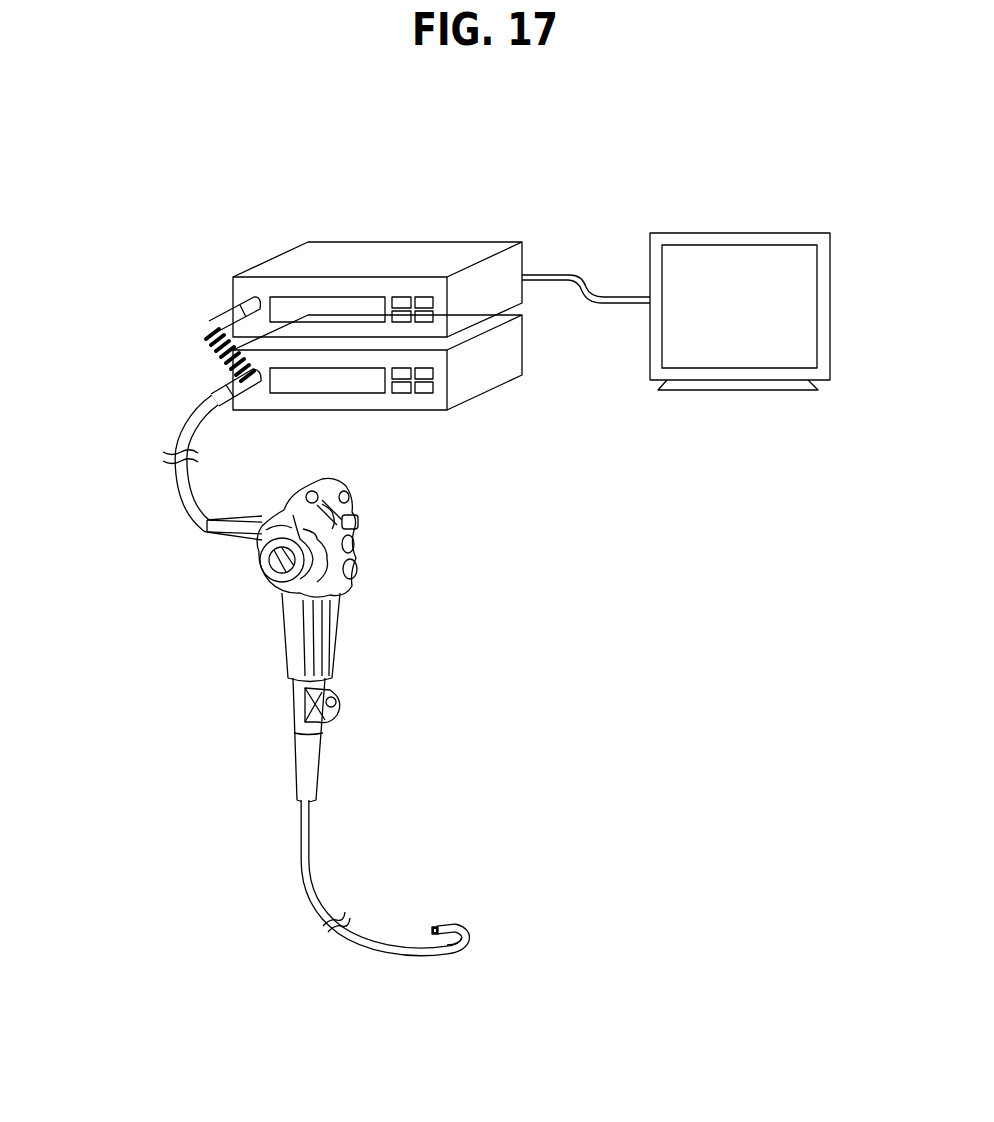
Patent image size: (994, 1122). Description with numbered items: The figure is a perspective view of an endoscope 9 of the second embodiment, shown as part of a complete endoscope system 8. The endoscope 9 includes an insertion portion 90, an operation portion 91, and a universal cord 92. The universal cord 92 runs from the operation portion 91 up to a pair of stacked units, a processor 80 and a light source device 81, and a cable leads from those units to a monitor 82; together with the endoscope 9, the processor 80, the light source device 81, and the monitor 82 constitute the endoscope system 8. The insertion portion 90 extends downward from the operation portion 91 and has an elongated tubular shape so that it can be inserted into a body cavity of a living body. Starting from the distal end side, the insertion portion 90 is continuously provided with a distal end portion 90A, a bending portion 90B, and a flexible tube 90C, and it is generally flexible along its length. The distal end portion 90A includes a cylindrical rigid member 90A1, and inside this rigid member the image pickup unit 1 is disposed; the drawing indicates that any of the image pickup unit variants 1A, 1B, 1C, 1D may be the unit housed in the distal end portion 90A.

The endoscope system 8 is at (686, 119).
The processor 80 is at (493, 240).
The light source device 81 is at (528, 349).
The monitor 82 is at (741, 232).
The endoscope 9 is at (431, 599).
The insertion portion 90 is at (313, 818).
The distal end portion 90A is at (394, 896).
The cylindrical rigid member 90A1 is at (432, 930).
The bending portion 90B is at (470, 949).
The flexible tube 90C is at (348, 942).
The operation portion 91 is at (355, 553).
The universal cord 92 is at (172, 483).
The image pickup unit 1 is at (498, 899).
The image pickup unit 1A is at (435, 930).
The image pickup unit 1B is at (435, 930).
The image pickup unit 1C is at (435, 930).
The image pickup unit 1D is at (438, 927).